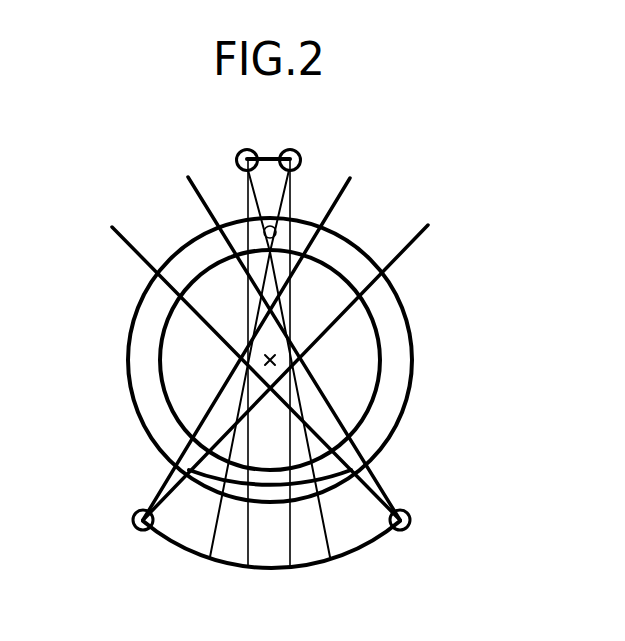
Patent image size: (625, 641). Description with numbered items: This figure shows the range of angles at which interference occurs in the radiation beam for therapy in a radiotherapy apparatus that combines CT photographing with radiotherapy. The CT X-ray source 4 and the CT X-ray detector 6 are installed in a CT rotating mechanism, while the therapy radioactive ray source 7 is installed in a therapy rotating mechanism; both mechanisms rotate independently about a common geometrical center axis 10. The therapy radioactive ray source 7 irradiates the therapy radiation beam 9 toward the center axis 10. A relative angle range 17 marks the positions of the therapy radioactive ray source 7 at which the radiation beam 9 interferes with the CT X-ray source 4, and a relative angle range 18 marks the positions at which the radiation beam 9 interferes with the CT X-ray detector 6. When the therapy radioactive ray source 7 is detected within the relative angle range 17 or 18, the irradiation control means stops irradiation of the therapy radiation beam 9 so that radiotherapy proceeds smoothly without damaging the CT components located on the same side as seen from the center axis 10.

The X-ray source for CT 4 is at (274, 226).
The X-ray detector for CT 6 is at (327, 484).
The radioactive ray source for therapy 7 is at (236, 159).
The radiation beam for therapy 9 is at (254, 199).
The geometrical center axis 10 is at (278, 357).
The relative angle range 17 is at (268, 157).
The relative angle range 18 is at (380, 536).